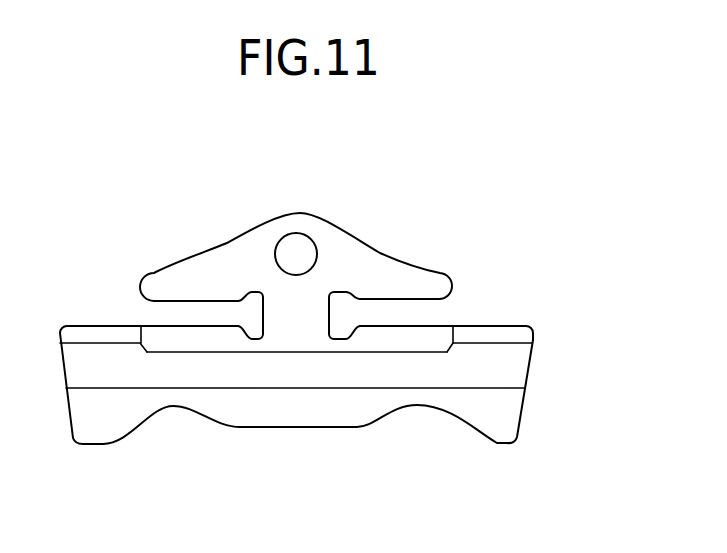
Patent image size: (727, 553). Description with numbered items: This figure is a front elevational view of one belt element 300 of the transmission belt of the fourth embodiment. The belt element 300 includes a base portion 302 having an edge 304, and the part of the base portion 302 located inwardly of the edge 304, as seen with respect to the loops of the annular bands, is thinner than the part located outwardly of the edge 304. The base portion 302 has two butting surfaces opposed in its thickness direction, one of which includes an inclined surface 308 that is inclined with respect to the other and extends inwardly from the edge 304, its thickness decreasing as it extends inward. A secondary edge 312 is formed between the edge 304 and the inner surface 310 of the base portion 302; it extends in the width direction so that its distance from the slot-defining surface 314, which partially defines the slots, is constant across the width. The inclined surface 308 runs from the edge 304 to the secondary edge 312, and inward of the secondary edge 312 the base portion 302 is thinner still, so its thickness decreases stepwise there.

The belt element 300 is at (510, 203).
The base portion 302 is at (323, 447).
The edge 304 is at (265, 362).
The inclined surface 308 is at (493, 368).
The inner surface 310 is at (498, 445).
The secondary edge 312 is at (392, 388).
The slot-defining surface 314 is at (495, 323).